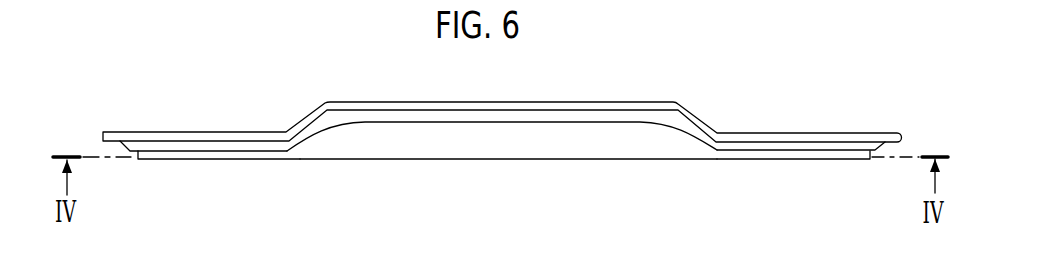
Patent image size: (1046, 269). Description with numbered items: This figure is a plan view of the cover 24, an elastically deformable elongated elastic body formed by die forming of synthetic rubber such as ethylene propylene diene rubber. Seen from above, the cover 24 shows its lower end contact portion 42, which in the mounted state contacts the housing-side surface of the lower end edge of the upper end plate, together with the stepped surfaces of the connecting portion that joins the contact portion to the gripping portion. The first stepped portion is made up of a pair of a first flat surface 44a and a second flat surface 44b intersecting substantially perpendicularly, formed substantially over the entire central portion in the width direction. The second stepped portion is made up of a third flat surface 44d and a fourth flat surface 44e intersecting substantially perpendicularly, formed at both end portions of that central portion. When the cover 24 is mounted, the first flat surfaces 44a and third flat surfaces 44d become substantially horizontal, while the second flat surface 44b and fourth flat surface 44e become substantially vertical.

The cover 24 is at (887, 93).
The lower end contact portion 42 is at (707, 108).
The first flat surface 44a is at (410, 117).
The second flat surface 44b is at (332, 127).
The third flat surface 44d is at (511, 148).
The fourth flat surface 44e is at (615, 161).